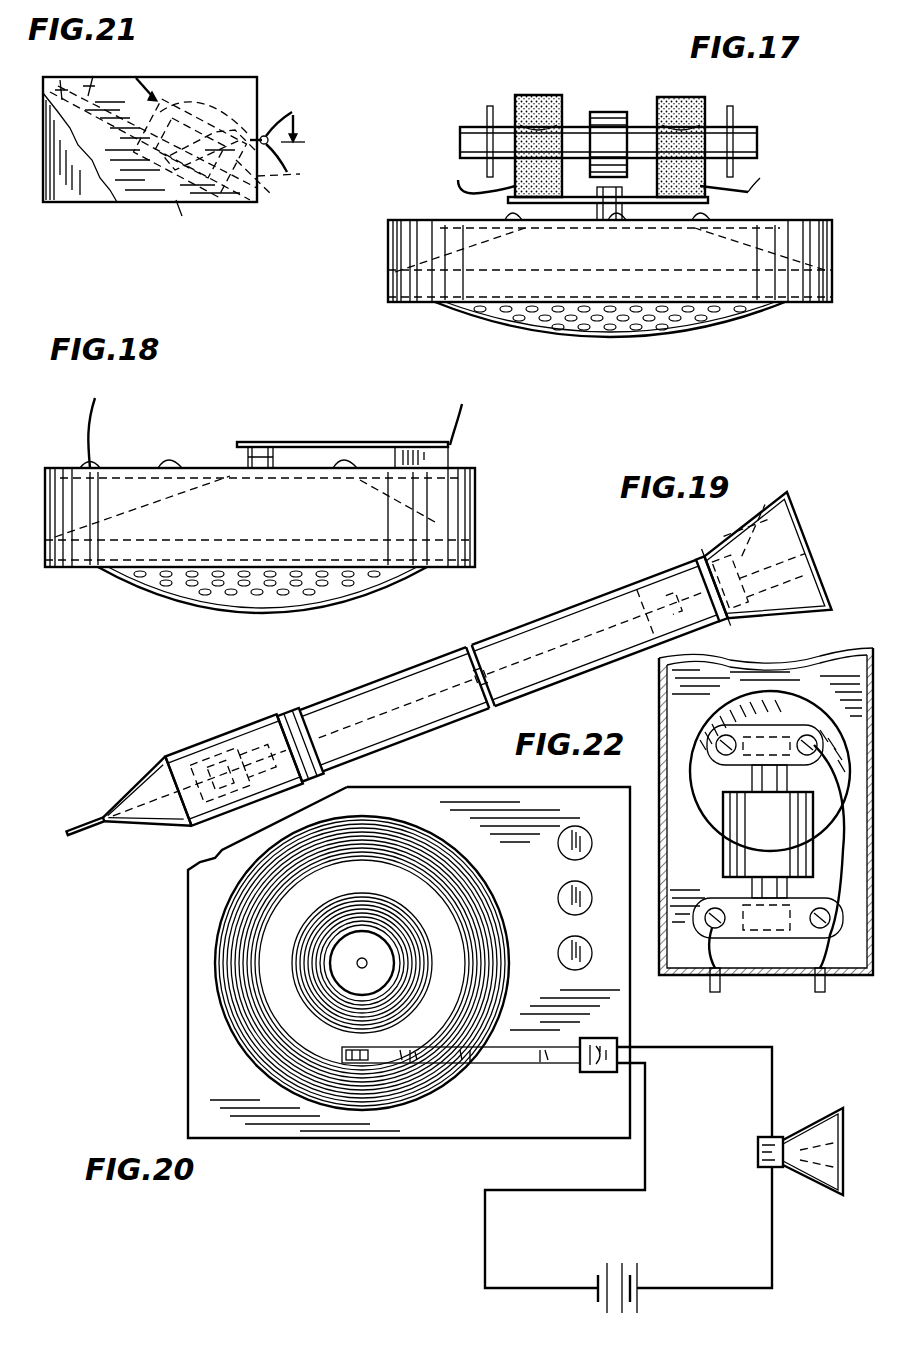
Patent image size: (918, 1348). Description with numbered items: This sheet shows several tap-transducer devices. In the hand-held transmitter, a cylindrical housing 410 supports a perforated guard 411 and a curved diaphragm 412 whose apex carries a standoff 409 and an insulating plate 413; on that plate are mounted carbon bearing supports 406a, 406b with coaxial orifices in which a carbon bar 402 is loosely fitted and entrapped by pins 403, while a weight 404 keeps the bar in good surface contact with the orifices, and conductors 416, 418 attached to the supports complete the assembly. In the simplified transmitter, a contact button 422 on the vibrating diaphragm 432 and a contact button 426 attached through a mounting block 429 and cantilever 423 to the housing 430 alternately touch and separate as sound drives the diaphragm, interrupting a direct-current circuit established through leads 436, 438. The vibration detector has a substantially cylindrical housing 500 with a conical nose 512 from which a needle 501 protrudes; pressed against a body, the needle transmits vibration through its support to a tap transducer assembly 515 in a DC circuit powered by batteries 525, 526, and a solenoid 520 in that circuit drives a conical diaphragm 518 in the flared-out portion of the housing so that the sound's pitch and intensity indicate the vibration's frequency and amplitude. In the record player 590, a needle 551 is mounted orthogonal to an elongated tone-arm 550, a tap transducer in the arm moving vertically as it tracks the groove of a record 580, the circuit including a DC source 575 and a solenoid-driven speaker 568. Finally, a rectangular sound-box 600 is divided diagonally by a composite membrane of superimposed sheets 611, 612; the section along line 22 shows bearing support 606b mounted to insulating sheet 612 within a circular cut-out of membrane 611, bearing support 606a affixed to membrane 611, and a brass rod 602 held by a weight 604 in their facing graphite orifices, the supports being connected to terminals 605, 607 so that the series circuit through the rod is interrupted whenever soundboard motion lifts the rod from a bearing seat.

In FIG. 21, the section line 22— 22 is at (231, 95).
In FIG. 21, the rectangular sound-box 600 is at (172, 181).
In FIG. 21, the rod 602 is at (294, 149).
In FIG. 22, the rod 602 is at (752, 782).
In FIG. 21, the weight 604 is at (232, 92).
In FIG. 22, the weight 604 is at (784, 948).
In FIG. 22, the electrical terminal 605 is at (714, 992).
In FIG. 21, the bearing support 606a is at (282, 185).
In FIG. 22, the bearing support 606a is at (728, 900).
In FIG. 21, the bearing support 606b is at (204, 217).
In FIG. 22, the bearing support 606b is at (730, 730).
In FIG. 22, the electrical terminal 607 is at (816, 992).
In FIG. 21, the membrane 611 is at (94, 73).
In FIG. 22, the membrane 611 is at (766, 811).
In FIG. 21, the membrane 612 is at (60, 66).
In FIG. 22, the membrane 612 is at (770, 771).
In FIG. 17, the bar 402 is at (757, 142).
In FIG. 17, the pin 403 is at (733, 110).
In FIG. 17, the weight 404 is at (596, 112).
In FIG. 17, the bearing support 406a is at (671, 98).
In FIG. 17, the bearing support 406b is at (538, 97).
In FIG. 17, the standoff 409 is at (590, 224).
In FIG. 17, the cylindrical housing 410 is at (832, 290).
In FIG. 17, the perforated guard 411 is at (740, 312).
In FIG. 17, the curved diaphragm 412 is at (790, 235).
In FIG. 17, the insulating plate 413 is at (710, 202).
In FIG. 17, the conductor 416 is at (748, 179).
In FIG. 17, the conductor 418 is at (458, 180).
In FIG. 18, the contact button 422 is at (258, 470).
In FIG. 18, the cantilever 423 is at (368, 442).
In FIG. 18, the contact button 426 is at (248, 455).
In FIG. 18, the mounting block 429 is at (450, 456).
In FIG. 18, the housing 430 is at (478, 530).
In FIG. 18, the diaphragm 432 is at (478, 497).
In FIG. 18, the lead 436 is at (460, 417).
In FIG. 18, the lead 438 is at (92, 427).
In FIG. 19, the cylindrical housing 500 is at (319, 716).
In FIG. 19, the needle 501 is at (76, 780).
In FIG. 19, the conical section 512 is at (138, 780).
In FIG. 19, the tap transducer assembly 515 is at (224, 745).
In FIG. 19, the conical diaphragm 518 is at (780, 561).
In FIG. 19, the solenoid 520 is at (692, 589).
In FIG. 19, the battery 525 is at (398, 707).
In FIG. 19, the battery 526 is at (596, 633).
In FIG. 20, the tone-arm 550 is at (398, 1047).
In FIG. 20, the needle 551 is at (346, 1047).
In FIG. 20, the solenoid-driven speaker 568 is at (820, 1130).
In FIG. 20, the DC source 575 is at (622, 1270).
In FIG. 20, the record 580 is at (398, 884).
In FIG. 20, the record player 590 is at (530, 882).